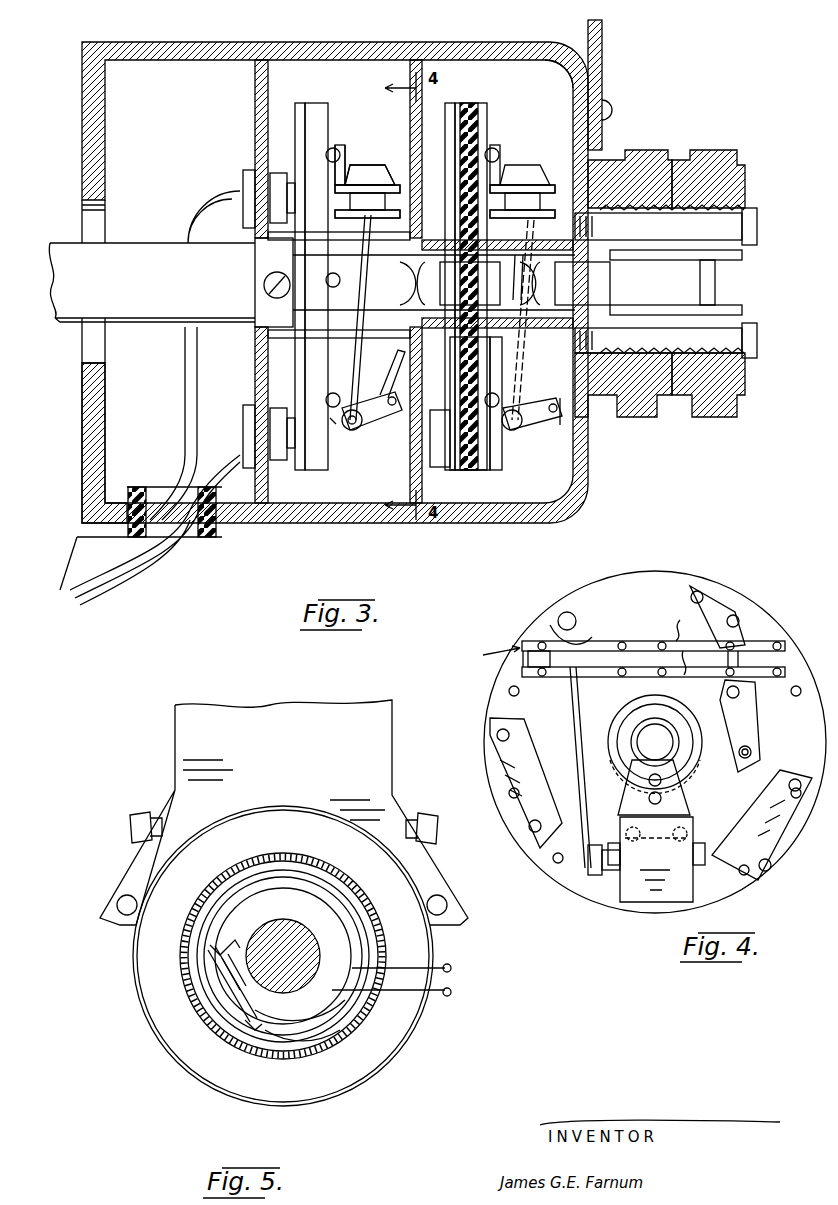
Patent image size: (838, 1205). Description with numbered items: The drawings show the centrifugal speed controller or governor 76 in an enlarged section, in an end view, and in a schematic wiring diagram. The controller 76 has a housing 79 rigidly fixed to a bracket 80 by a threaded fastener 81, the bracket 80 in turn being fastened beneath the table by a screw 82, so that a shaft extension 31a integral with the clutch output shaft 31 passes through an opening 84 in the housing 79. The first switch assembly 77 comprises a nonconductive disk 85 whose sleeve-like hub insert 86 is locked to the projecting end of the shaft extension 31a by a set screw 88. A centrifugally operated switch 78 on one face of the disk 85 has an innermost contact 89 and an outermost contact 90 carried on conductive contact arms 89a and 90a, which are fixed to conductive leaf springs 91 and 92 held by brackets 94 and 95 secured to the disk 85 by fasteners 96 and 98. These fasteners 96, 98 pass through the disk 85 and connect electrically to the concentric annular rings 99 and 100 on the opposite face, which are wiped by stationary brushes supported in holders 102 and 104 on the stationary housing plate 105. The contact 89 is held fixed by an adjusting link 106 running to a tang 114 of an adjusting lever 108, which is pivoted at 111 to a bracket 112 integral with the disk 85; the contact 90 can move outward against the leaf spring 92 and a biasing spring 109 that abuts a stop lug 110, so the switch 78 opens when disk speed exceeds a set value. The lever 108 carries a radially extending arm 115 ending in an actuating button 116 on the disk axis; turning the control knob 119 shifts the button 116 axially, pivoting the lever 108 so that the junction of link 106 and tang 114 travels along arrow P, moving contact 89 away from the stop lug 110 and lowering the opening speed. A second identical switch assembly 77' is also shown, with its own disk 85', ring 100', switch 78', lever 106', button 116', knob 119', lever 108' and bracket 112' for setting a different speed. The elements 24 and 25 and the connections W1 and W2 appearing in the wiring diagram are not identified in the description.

In FIG. 3, the speed controller 76 is at (433, 33).
In FIG. 5, the speed controller 76 is at (167, 976).
In FIG. 3, the housing 79 is at (560, 58).
In FIG. 3, the bracket 80 is at (602, 43).
In FIG. 3, the threaded fastener 81 is at (283, 173).
In FIG. 3, the opening 84 is at (95, 362).
In FIG. 3, the disk 85 is at (323, 272).
In FIG. 4, the disk 85 is at (655, 725).
In FIG. 5, the disk 85 is at (283, 946).
In FIG. 3, the second disc 85' is at (488, 277).
In FIG. 3, the hub insert 86 is at (255, 262).
In FIG. 3, the set screw 88 is at (264, 287).
In FIG. 3, the annular ring 100 is at (290, 273).
In FIG. 5, the annular ring 100 is at (307, 956).
In FIG. 3, the second insulating plate 100' is at (485, 270).
In FIG. 3, the switch assembly 77 is at (367, 143).
In FIG. 3, the second centrifugal switch assembly 77' is at (522, 152).
In FIG. 3, the centrifugally operated switch 78 is at (369, 181).
In FIG. 4, the centrifugally operated switch 78 is at (495, 645).
In FIG. 3, the second terminal 78' is at (531, 183).
In FIG. 3, the biasing spring 109 is at (382, 150).
In FIG. 4, the biasing spring 109 is at (586, 630).
In FIG. 3, the stop lug 110 is at (360, 135).
In FIG. 4, the stop lug 110 is at (565, 611).
In FIG. 3, the stationary housing plate 105 is at (255, 125).
In FIG. 3, the holder 102 is at (238, 172).
In FIG. 3, the holder 104 is at (243, 420).
In FIG. 3, the screw 82 is at (283, 408).
In FIG. 3, the shaft extension 31a is at (143, 243).
In FIG. 5, the shaft extension 31a is at (323, 960).
In FIG. 3, the clutch output shaft 31 is at (511, 263).
In FIG. 3, the adjusting link 106 is at (375, 317).
In FIG. 4, the adjusting link 106 is at (558, 767).
In FIG. 3, the lever 106' is at (546, 320).
In FIG. 3, the actuating button 116 is at (450, 281).
In FIG. 4, the actuating button 116 is at (646, 744).
In FIG. 3, the second bearing sleeve 116' is at (580, 283).
In FIG. 3, the control knob 119 is at (631, 271).
In FIG. 3, the control knob 119' is at (666, 271).
In FIG. 3, the tang 114 is at (358, 428).
In FIG. 4, the tang 114 is at (592, 870).
In FIG. 3, the pivot 111 is at (390, 430).
In FIG. 3, the bracket 112 is at (372, 444).
In FIG. 3, the second lever arm 112' is at (532, 436).
In FIG. 3, the radially extending arm 115 is at (455, 403).
In FIG. 3, the adjusting lever 108 is at (461, 403).
In FIG. 4, the adjusting lever 108 is at (674, 831).
In FIG. 3, the second armature 108' is at (564, 429).
In FIG. 3, the arrow P is at (329, 413).
In FIG. 4, the outermost contact 90 is at (540, 655).
In FIG. 5, the outermost contact 90 is at (253, 1032).
In FIG. 4, the contact arm 90a is at (592, 645).
In FIG. 4, the innermost contact 89 is at (524, 667).
In FIG. 5, the innermost contact 89 is at (240, 1010).
In FIG. 4, the contact arm 89a is at (585, 680).
In FIG. 4, the leaf spring 91 is at (690, 676).
In FIG. 5, the leaf spring 91 is at (225, 1000).
In FIG. 4, the leaf spring 92 is at (676, 641).
In FIG. 5, the leaf spring 92 is at (222, 955).
In FIG. 4, the bracket 94 is at (758, 740).
In FIG. 4, the bracket 95 is at (765, 640).
In FIG. 4, the fastener 96 is at (732, 695).
In FIG. 4, the fastener 98 is at (735, 615).
In FIG. 5, the motor housing 24 is at (395, 770).
In FIG. 5, the mounting bolt 25 is at (440, 826).
In FIG. 5, the annular ring 99 is at (345, 898).
In FIG. 5, the wire W1 is at (335, 1030).
In FIG. 5, the second wire W2 is at (370, 990).